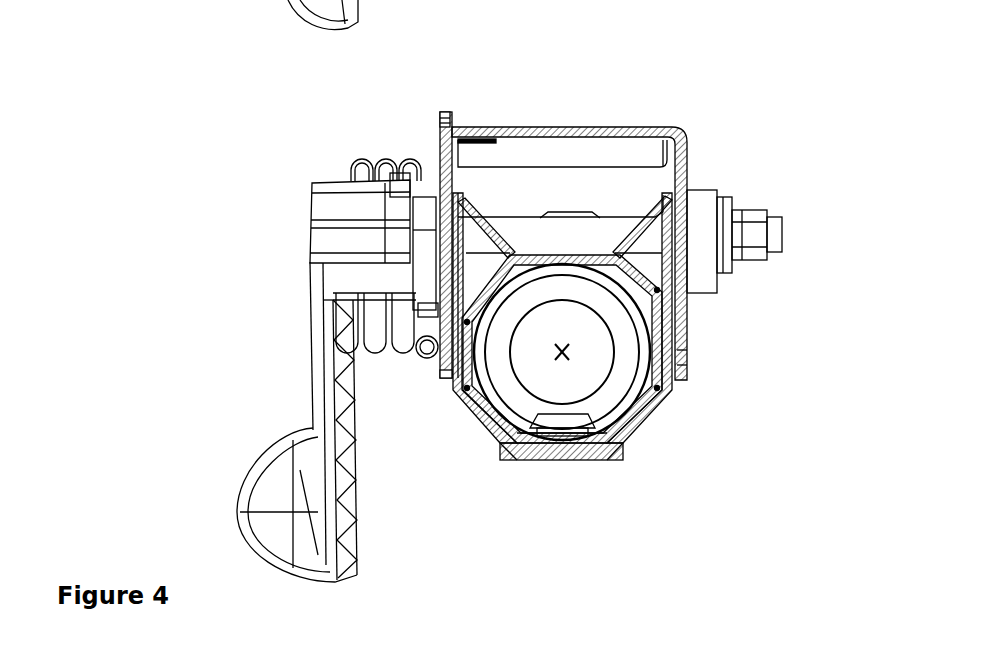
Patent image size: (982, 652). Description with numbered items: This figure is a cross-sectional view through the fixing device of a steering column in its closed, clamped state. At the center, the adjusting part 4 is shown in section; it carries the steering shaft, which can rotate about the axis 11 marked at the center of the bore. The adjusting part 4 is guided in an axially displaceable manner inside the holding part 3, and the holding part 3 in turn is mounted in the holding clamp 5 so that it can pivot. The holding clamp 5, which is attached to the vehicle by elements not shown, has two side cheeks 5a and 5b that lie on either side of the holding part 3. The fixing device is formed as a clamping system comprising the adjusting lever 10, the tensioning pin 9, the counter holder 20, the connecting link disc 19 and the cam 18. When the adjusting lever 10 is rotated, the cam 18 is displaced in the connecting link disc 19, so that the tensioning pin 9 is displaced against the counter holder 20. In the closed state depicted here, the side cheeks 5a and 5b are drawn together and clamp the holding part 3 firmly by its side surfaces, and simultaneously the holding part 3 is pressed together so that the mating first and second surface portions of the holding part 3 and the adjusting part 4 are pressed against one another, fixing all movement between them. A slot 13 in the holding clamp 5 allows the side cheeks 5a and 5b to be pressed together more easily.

The holding part 3 is at (688, 213).
The adjusting part 4 is at (688, 238).
The holding clamp 5 is at (553, 128).
The side cheek 5a is at (413, 333).
The side cheek 5b is at (690, 357).
The tensioning pin 9 is at (555, 232).
The adjusting lever 10 is at (282, 497).
The axis 11 is at (568, 360).
The slot 13 is at (455, 130).
The cam 18 is at (407, 183).
The connecting link disc 19 is at (428, 278).
The counter holder 20 is at (697, 198).